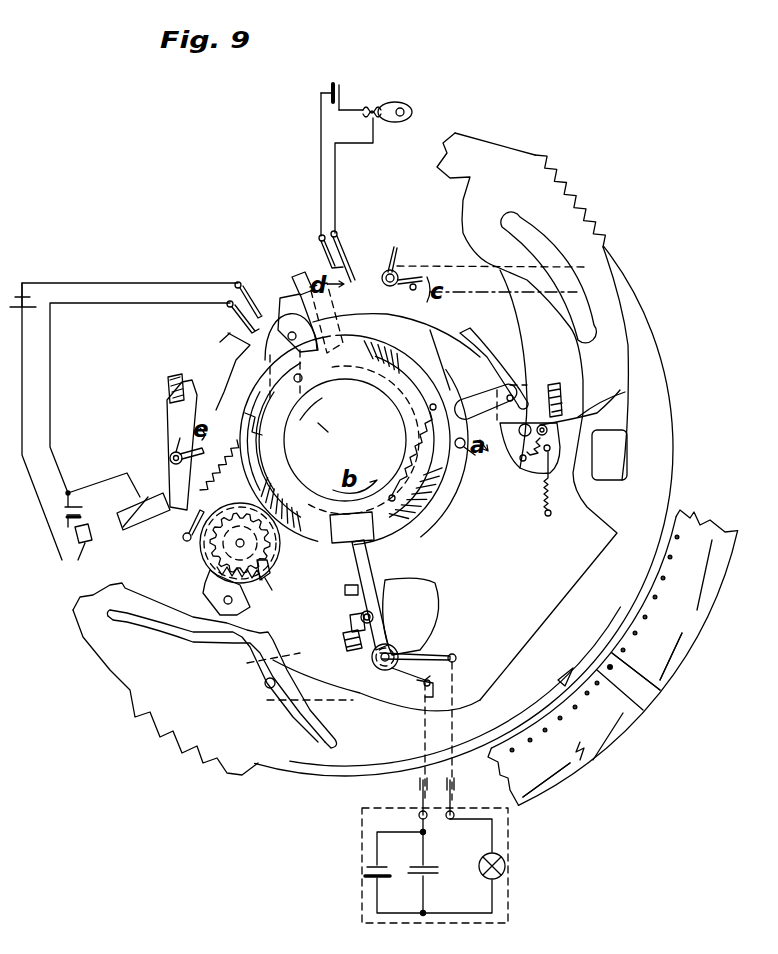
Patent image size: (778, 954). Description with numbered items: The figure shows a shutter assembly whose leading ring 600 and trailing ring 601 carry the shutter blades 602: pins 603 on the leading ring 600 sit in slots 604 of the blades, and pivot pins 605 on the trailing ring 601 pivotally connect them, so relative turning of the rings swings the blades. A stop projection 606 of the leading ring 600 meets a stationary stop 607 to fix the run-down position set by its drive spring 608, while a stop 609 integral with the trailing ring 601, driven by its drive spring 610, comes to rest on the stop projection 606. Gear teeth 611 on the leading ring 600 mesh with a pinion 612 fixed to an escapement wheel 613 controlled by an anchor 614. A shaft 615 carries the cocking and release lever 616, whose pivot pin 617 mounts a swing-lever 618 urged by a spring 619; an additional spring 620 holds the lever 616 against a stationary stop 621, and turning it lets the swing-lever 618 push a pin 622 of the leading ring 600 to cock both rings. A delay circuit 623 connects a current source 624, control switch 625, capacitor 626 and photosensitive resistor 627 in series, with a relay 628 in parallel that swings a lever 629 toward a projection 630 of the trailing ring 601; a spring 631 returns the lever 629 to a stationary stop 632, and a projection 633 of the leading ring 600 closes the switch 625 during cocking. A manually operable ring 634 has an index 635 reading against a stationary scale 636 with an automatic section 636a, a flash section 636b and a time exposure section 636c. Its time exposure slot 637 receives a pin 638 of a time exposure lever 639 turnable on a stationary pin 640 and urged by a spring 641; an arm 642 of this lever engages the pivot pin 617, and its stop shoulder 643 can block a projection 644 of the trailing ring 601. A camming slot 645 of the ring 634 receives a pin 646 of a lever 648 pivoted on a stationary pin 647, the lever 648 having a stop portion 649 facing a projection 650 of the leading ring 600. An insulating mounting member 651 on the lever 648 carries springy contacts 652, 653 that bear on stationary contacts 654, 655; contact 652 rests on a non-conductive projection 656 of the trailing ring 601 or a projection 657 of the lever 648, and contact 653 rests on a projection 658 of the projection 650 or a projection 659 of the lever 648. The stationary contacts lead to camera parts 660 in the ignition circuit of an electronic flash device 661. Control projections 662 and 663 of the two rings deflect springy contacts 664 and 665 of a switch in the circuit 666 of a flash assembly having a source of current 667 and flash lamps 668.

The leading ring 600 is at (460, 490).
The trailing ring 601 is at (390, 397).
The shutter blades 602 is at (330, 445).
The pins 603 is at (280, 313).
The slots 604 is at (302, 357).
The pivot pins 605 is at (312, 427).
The stop projection 606 is at (338, 426).
The stationary stop 607 is at (328, 455).
The drive spring 608 is at (190, 541).
The stop 609 is at (260, 425).
The drive spring 610 is at (400, 470).
The gear teeth 611 is at (253, 547).
The pinion 612 is at (275, 587).
The escapement wheel 613 is at (210, 573).
The anchor 614 is at (212, 607).
The shaft 615 is at (573, 423).
The cocking and release lever 616 is at (545, 440).
The pivot pin 617 is at (503, 392).
The swing-lever 618 is at (577, 417).
The spring 619 is at (527, 467).
The additional spring 620 is at (566, 488).
The stationary stop 621 is at (542, 391).
The pin 622 is at (470, 443).
The circuit 623 is at (50, 418).
The current source 624 is at (22, 283).
The control switch 625 is at (241, 288).
The capacitor 626 is at (80, 512).
The photosensitive resistor 627 is at (75, 545).
The relay 628 is at (140, 497).
The lever 629 is at (172, 427).
The projection 630 is at (214, 372).
The spring 631 is at (170, 447).
The stationary stop 632 is at (172, 386).
The projection 633 is at (248, 334).
The ring 634 is at (330, 770).
The index 635 is at (567, 673).
The stationary scale 636 is at (605, 768).
The central section 636a is at (647, 700).
The section 636b is at (622, 730).
The section 636c is at (700, 617).
The time exposure slot 637 is at (600, 337).
The pin 638 is at (587, 293).
The time exposure lever 639 is at (467, 267).
The stationary pin 640 is at (384, 272).
The spring 641 is at (410, 260).
The arm 642 is at (510, 340).
The stop shoulder 643 is at (462, 330).
The projection 644 is at (445, 345).
The camming slot 645 is at (180, 645).
The pin 646 is at (265, 686).
The stationary pin 647 is at (410, 696).
The lever 648 is at (330, 683).
The stop portion 649 is at (393, 622).
The projection 650 is at (350, 618).
The mounting member 651 is at (380, 670).
The springy contact 652 is at (383, 683).
The springy contact 653 is at (430, 653).
The stationary contact 654 is at (425, 697).
The stationary contact 655 is at (457, 659).
The projection 656 is at (387, 567).
The projection 657 is at (345, 640).
The projection 658 is at (345, 593).
The projection 659 is at (365, 640).
The parts 660 is at (451, 775).
The electronic flash device 661 is at (508, 843).
The control projection 662 is at (330, 303).
The control projection 663 is at (297, 277).
The springy contact 664 is at (340, 258).
The springy contact 665 is at (318, 244).
The circuit 666 is at (326, 160).
The source of current 667 is at (346, 76).
The flash lamps 668 is at (406, 100).